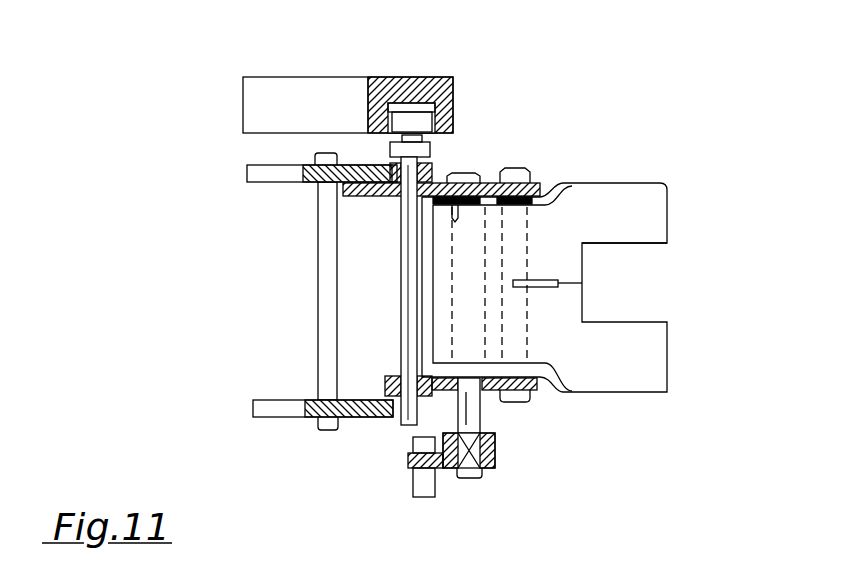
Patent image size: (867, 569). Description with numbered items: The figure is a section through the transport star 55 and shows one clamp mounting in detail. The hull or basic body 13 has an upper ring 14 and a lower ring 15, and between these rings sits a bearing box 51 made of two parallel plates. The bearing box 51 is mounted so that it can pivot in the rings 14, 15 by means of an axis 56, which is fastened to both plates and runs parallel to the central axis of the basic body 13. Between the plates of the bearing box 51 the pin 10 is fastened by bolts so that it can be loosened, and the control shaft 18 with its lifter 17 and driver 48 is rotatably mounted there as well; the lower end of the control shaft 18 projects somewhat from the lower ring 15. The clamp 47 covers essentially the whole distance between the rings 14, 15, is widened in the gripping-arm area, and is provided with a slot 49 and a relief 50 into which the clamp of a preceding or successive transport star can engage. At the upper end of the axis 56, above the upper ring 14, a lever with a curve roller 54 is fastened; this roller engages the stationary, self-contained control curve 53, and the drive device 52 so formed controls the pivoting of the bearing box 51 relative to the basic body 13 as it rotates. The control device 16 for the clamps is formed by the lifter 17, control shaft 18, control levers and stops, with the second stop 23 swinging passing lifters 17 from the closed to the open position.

The pin 10 is at (553, 183).
The basic body 13 is at (203, 278).
The upper ring 14 is at (270, 173).
The lower ring 15 is at (275, 408).
The control device 16 is at (480, 493).
The lifter 17 is at (488, 400).
The control shaft 18 is at (472, 420).
The second stop 23 is at (422, 487).
The clamp 47 is at (643, 378).
The driver 48 is at (441, 183).
The slot 49 is at (582, 283).
The relief 50 is at (643, 243).
The bearing box 51 is at (535, 182).
The drive device 52 is at (476, 88).
The control curve 53 is at (398, 88).
The curve roller 54 is at (385, 130).
The transport star 55 is at (652, 136).
The axis 56 is at (407, 343).